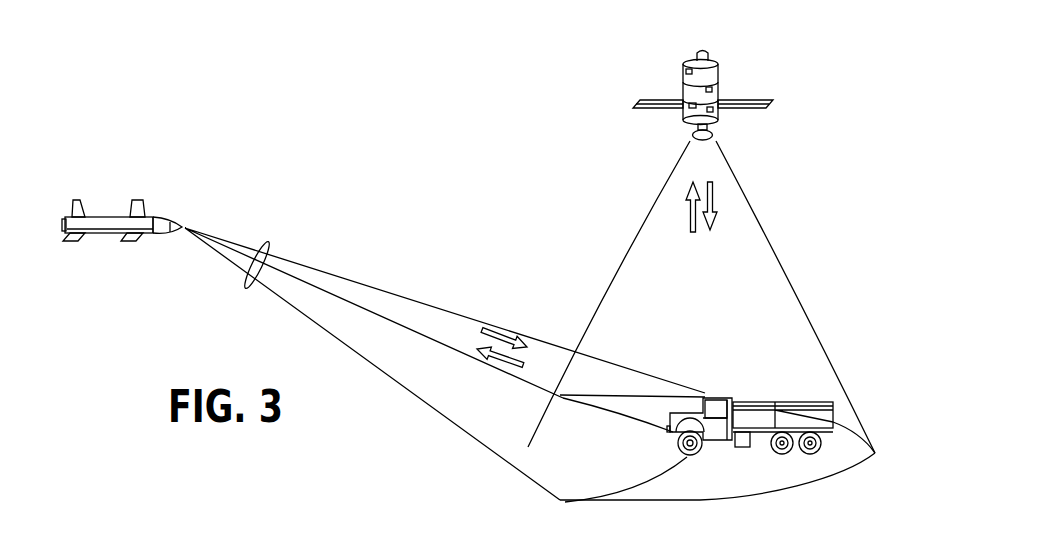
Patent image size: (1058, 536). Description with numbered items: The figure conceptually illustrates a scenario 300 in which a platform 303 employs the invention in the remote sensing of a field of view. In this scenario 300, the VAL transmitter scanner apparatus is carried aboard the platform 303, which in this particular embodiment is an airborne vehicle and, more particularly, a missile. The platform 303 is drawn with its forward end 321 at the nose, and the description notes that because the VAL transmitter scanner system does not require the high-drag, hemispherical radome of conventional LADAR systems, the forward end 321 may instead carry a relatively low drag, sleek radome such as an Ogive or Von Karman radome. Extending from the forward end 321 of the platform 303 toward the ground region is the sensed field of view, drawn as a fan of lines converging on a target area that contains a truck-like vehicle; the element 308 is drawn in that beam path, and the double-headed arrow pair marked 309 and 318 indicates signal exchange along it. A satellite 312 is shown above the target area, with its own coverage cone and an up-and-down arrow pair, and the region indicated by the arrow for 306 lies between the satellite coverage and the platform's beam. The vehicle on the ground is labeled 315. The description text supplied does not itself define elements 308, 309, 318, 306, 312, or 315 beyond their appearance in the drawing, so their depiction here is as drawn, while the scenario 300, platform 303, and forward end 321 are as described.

The scenario 300 is at (157, 142).
The platform 303 is at (137, 202).
The forward end 321 is at (163, 233).
The optical lens 308 is at (262, 248).
The transmitted signal arrow 309 is at (497, 330).
The return signal arrow 318 is at (510, 368).
The communication link / coverage region 306 is at (588, 282).
The satellite 312 is at (718, 90).
The target vehicle (truck) 315 is at (810, 393).